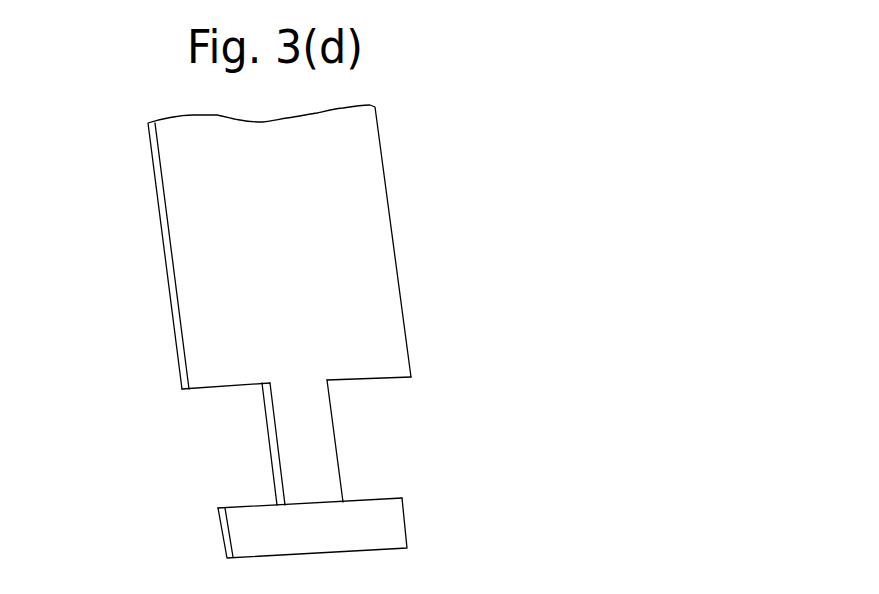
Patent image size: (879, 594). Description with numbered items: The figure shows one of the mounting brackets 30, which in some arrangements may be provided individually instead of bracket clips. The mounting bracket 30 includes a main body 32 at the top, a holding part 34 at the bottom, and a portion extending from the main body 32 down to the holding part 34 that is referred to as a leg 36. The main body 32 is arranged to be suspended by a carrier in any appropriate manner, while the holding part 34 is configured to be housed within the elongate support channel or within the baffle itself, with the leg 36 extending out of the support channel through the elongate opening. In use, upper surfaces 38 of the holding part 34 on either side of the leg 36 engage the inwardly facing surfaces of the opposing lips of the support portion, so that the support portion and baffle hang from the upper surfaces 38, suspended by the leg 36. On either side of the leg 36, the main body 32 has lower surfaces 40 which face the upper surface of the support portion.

The mounting bracket 30 is at (420, 182).
The main body 32 is at (210, 217).
The holding part 34 is at (348, 532).
The leg 36 is at (312, 447).
The upper surfaces 38 is at (250, 505).
The lower surfaces 40 is at (207, 389).